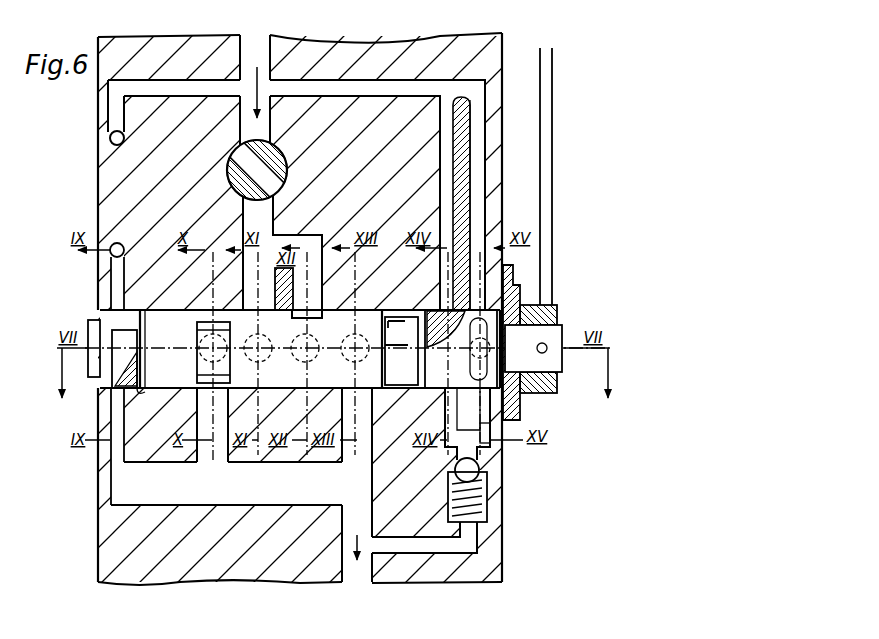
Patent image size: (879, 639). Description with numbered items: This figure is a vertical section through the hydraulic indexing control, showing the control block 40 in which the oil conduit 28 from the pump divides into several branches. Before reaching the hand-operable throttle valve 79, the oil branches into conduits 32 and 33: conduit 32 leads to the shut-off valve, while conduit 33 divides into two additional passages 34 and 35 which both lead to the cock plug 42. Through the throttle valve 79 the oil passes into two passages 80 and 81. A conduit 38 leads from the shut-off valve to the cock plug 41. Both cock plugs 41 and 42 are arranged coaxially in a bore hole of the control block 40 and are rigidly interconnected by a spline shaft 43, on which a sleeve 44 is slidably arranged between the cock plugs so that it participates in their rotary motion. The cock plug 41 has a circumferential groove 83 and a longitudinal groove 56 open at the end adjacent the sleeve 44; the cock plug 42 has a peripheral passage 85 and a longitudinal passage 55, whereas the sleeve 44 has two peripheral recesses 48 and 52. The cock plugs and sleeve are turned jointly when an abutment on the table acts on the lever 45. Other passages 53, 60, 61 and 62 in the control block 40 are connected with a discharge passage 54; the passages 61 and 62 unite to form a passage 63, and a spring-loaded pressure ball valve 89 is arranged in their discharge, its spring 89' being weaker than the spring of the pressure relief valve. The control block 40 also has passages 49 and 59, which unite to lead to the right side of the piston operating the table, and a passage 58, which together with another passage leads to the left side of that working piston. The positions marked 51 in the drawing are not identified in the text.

The conduit 28 is at (255, 90).
The conduit 32 is at (90, 156).
The conduit 33 is at (377, 195).
The passage 34 is at (455, 146).
The passage 35 is at (486, 176).
The conduit 38 is at (111, 254).
The control block 40 is at (492, 64).
The cock plug 41 is at (100, 321).
The cock plug 42 is at (461, 349).
The spline shaft 43 is at (401, 351).
The sleeve 44 is at (348, 349).
The lever 45 is at (552, 120).
The peripheral recess 48 is at (322, 312).
The passage 49 is at (305, 348).
The piston 51 is at (213, 352).
The peripheral recess 52 is at (212, 425).
The passage 53 is at (226, 474).
The discharge passage 54 is at (357, 543).
The longitudinal passage 55 is at (445, 317).
The longitudinal groove 56 is at (148, 400).
The passage 58 is at (258, 348).
The passage 59 is at (355, 348).
The passage 60 is at (357, 462).
The passage 61 is at (451, 457).
The passage 62 is at (490, 442).
The passage 63 is at (424, 537).
The throttle valve 79 is at (257, 170).
The passage 80 is at (282, 256).
The passage 81 is at (295, 289).
The circumferential groove 83 is at (124, 359).
The peripheral passage 85 is at (520, 400).
The pressure ball valve 89 is at (467, 470).
The spring 89' is at (493, 500).